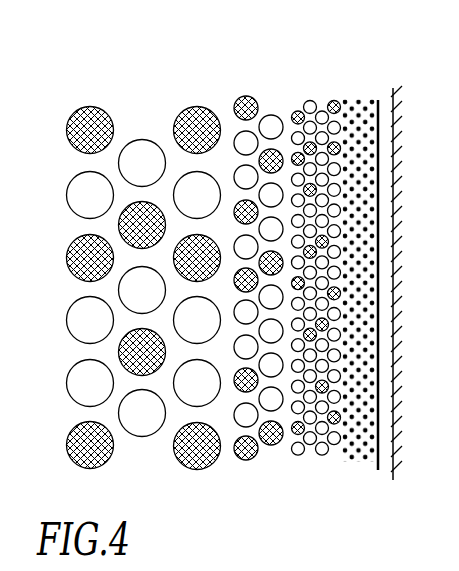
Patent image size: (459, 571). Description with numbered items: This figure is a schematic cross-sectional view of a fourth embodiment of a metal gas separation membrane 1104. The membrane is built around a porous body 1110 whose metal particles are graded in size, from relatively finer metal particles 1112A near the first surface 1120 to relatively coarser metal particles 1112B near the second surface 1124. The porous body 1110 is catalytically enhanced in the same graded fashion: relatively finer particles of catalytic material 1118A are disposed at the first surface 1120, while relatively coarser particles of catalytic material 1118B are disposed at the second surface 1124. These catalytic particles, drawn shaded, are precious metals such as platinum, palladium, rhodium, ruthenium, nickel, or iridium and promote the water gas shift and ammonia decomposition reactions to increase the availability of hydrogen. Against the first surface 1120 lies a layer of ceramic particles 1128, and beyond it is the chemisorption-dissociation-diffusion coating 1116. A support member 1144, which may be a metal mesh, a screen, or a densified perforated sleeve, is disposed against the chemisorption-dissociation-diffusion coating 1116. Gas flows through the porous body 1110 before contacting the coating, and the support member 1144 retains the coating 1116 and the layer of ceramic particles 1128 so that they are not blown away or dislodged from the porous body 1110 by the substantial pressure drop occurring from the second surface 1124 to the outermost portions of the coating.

The metal gas separation membrane 1104 is at (176, 92).
The porous body 1110 is at (343, 489).
The relatively coarser particles of catalytic material 1118B is at (80, 106).
The relatively coarser metal particles 1112B is at (67, 196).
The second surface 1124 is at (78, 414).
The relatively finer metal particles 1112A is at (306, 101).
The relatively finer particles of catalytic material 1118A is at (337, 101).
The first surface 1120 is at (348, 137).
The layer of ceramic particles 1128 is at (362, 462).
The chemisorption-dissociation-diffusion coating 1116 is at (378, 470).
The support member 1144 is at (403, 434).